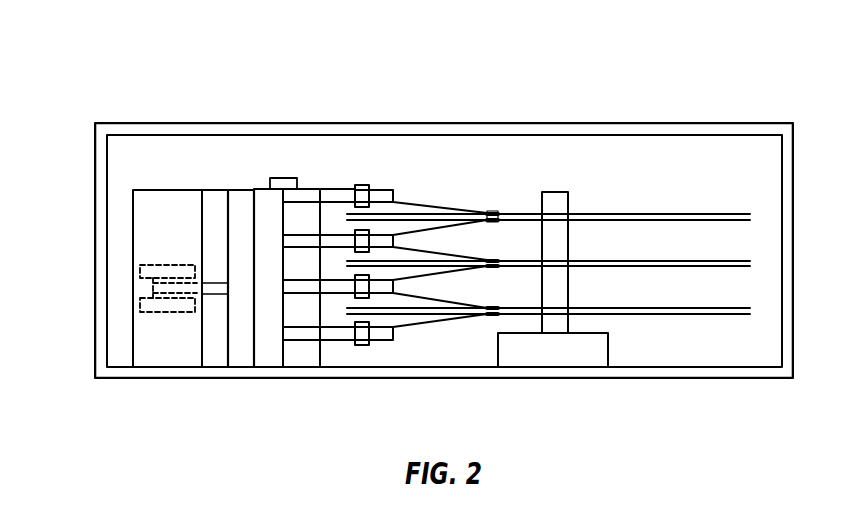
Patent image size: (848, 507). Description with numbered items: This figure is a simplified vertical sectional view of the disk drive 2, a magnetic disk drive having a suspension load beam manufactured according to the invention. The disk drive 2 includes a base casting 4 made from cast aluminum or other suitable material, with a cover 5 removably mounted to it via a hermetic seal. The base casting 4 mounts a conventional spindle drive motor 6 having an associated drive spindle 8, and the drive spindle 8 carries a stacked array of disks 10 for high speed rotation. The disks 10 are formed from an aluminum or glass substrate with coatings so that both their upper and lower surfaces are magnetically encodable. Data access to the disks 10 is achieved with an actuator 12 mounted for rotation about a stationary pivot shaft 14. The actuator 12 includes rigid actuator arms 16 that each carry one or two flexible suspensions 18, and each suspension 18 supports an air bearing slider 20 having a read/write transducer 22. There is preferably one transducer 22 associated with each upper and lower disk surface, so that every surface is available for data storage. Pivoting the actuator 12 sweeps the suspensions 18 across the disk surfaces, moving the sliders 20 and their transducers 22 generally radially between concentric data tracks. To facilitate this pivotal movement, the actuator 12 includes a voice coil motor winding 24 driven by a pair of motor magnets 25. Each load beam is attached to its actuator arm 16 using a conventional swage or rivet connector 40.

The disk drive 2 is at (92, 66).
The base casting 4 is at (330, 378).
The cover 5 is at (197, 122).
The spindle drive motor 6 is at (608, 352).
The drive spindle 8 is at (568, 202).
The disks 10 is at (677, 214).
The actuator 12 is at (263, 360).
The pivot shaft 14 is at (275, 178).
The actuator arms 16 is at (340, 187).
The suspensions 18 is at (430, 198).
The air bearing slider 20 is at (490, 208).
The read/write transducer 22 is at (497, 211).
The voice coil motor winding 24 is at (138, 280).
The motor magnets 25 is at (193, 313).
The swage or rivet connector 40 is at (365, 185).